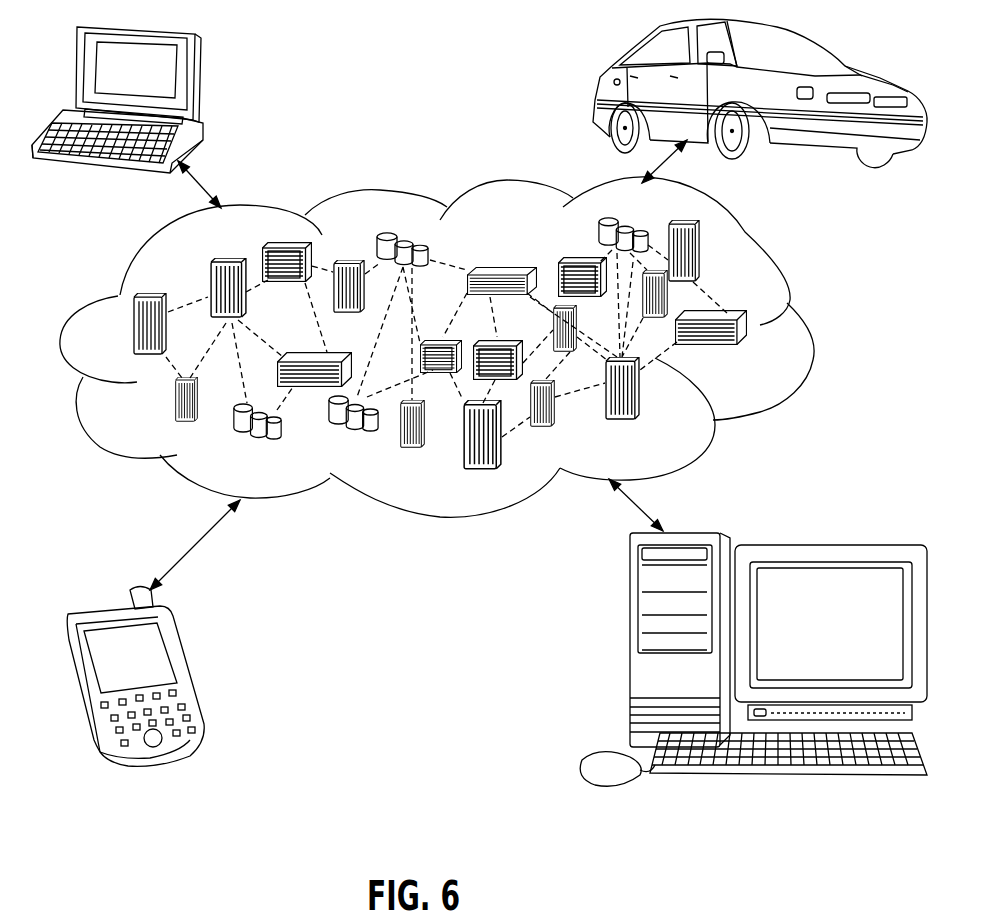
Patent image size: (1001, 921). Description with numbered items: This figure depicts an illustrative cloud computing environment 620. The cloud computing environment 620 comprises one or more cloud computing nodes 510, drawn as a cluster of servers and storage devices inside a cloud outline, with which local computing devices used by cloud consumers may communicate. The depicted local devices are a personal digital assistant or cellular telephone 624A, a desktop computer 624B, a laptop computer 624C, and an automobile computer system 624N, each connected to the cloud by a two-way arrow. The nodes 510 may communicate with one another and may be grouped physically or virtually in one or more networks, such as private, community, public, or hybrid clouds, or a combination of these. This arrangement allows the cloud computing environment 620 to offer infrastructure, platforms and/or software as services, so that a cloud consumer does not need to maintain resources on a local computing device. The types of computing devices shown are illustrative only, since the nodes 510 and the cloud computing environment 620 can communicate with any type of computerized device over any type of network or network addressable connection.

The cloud computing nodes 510 is at (797, 285).
The cloud computing environment 620 is at (778, 352).
The personal digital assistant (PDA) or cellular telephone 624A is at (187, 668).
The desktop computer 624B is at (630, 650).
The laptop computer 624C is at (197, 77).
The automobile computer system 624N is at (603, 80).